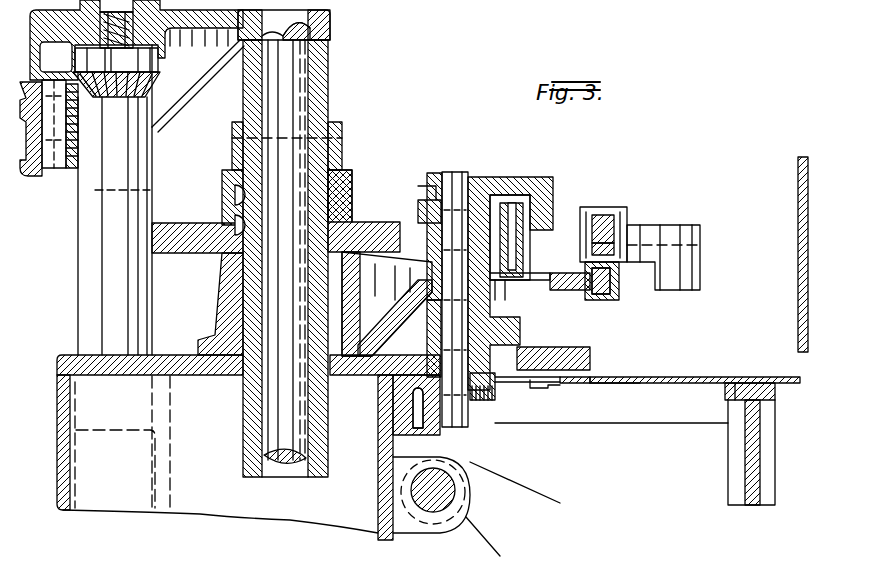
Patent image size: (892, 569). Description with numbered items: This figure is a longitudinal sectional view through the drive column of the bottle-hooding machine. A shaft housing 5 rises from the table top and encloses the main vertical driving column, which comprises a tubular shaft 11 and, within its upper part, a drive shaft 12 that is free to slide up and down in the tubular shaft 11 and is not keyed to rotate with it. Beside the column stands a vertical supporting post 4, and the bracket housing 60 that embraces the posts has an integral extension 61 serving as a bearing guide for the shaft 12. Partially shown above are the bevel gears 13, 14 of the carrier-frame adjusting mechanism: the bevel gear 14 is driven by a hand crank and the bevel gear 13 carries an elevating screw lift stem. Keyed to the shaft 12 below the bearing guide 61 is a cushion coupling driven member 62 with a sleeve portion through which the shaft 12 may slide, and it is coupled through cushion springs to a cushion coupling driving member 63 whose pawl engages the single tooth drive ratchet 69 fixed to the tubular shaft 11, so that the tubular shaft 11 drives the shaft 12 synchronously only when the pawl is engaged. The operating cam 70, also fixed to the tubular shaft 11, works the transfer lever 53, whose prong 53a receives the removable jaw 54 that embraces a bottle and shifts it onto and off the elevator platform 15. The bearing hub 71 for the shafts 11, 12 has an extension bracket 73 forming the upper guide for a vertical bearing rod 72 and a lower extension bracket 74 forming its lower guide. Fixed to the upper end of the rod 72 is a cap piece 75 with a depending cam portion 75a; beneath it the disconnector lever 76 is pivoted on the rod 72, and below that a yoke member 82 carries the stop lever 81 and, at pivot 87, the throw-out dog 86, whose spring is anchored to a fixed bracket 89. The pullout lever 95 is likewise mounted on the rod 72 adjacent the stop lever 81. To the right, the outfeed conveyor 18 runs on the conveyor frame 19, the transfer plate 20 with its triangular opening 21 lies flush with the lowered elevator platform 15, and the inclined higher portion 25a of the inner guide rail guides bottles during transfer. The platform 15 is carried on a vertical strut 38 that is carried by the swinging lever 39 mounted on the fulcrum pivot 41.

The vertical supporting post 4 is at (100, 288).
The shaft housing 5 is at (66, 386).
The tubular shaft 11 is at (242, 412).
The drive shaft 12 is at (290, 64).
The bevel gear 13 is at (186, 70).
The bevel gear 14 is at (74, 176).
The bottle elevator platform 15 is at (698, 380).
The outfeed conveyor 18 is at (548, 397).
The conveyor frame 19 is at (652, 424).
The transfer plate 20 is at (604, 380).
The triangular opening 21 is at (640, 386).
The higher portion of guide rail 25a is at (800, 212).
The vertical strut 38 is at (748, 476).
The swinging lever 39 is at (512, 540).
The fulcrum pivot 41 is at (430, 506).
The transfer lever 53 is at (612, 294).
The prong 53a is at (610, 214).
The removable jaw 54 is at (692, 274).
The bracket housing 60 is at (136, 40).
The bearing guide extension 61 is at (318, 32).
The cushion coupling driven member 62 is at (330, 92).
The cushion coupling driving member 63 is at (238, 148).
The single tooth drive ratchet 69 is at (344, 190).
The operating cam 70 is at (198, 226).
The bearing hub 71 is at (228, 313).
The vertical bearing rod 72 is at (452, 178).
The extension bracket 73 is at (387, 304).
The lower extension bracket 74 is at (482, 432).
The cap piece 75 is at (514, 182).
The depending cam portion 75a is at (556, 212).
The disconnector lever 76 is at (420, 212).
The stop lever 81 is at (578, 368).
The yoke member 82 is at (520, 302).
The throw-out dog 86 is at (545, 197).
The pivot 87 is at (532, 216).
The fixed bracket 89 is at (525, 278).
The pullout lever 95 is at (432, 338).